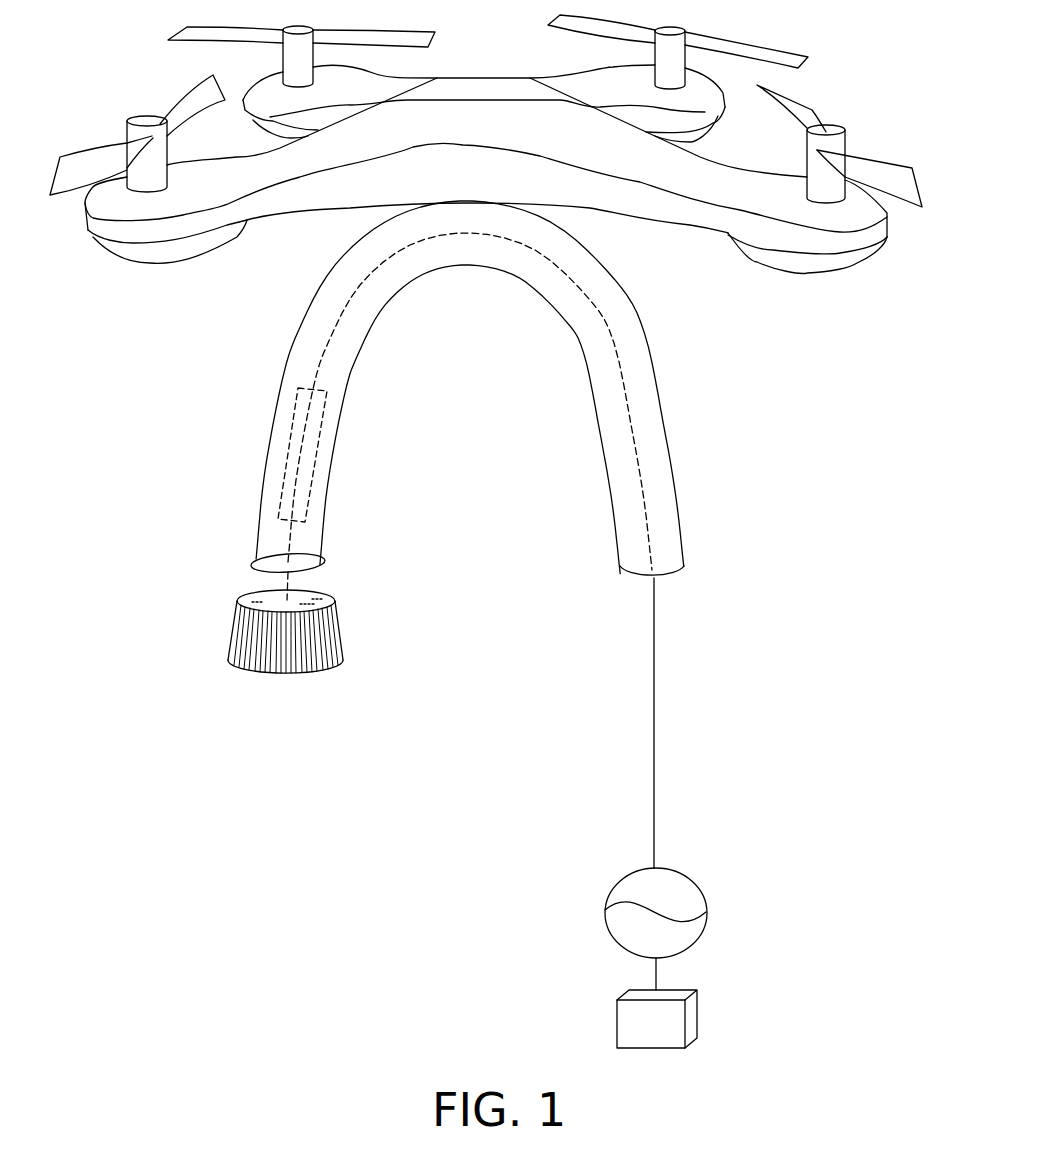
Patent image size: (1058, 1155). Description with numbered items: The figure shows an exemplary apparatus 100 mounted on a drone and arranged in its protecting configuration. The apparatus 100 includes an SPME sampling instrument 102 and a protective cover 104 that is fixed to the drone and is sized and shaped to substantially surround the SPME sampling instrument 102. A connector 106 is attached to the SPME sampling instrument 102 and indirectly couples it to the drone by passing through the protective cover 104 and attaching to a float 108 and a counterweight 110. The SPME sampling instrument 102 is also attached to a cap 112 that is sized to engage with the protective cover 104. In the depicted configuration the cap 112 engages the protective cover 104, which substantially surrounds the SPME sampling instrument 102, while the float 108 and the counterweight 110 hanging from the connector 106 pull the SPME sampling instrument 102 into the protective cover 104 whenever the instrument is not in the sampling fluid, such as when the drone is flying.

The apparatus 100 is at (716, 446).
The SPME sampling instrument 102 is at (303, 455).
The protective cover 104 is at (292, 343).
The connector 106 is at (655, 677).
The float 108 is at (707, 892).
The counterweight 110 is at (697, 1012).
The cap 112 is at (234, 631).